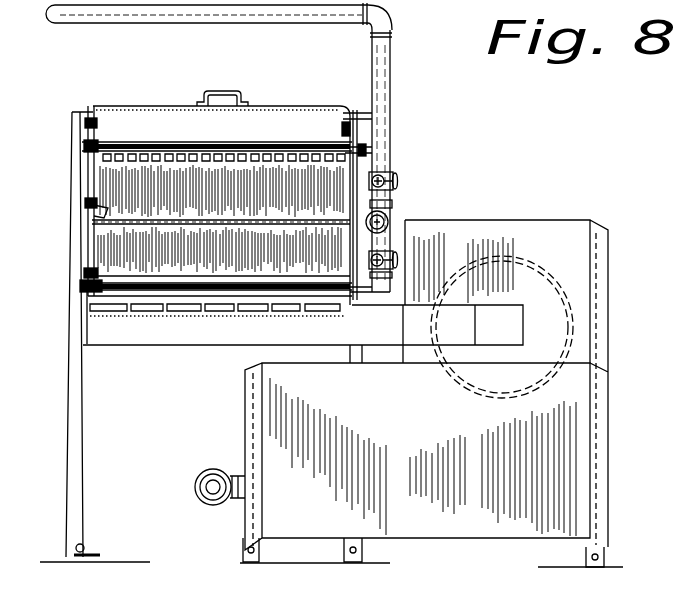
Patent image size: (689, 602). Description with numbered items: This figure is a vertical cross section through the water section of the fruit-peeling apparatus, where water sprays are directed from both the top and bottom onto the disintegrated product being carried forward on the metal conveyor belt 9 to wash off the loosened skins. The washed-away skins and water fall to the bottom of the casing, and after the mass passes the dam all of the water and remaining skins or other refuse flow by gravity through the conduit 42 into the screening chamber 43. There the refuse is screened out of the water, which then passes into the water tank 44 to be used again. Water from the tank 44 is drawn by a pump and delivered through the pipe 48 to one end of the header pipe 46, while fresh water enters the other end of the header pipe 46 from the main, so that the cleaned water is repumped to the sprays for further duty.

The metal conveyor belt 9 is at (104, 219).
The conduit 42 is at (303, 334).
The screening chamber 43 is at (506, 383).
The water tank 44 is at (423, 465).
The header pipe 46 is at (389, 219).
The pipe 48 is at (214, 494).